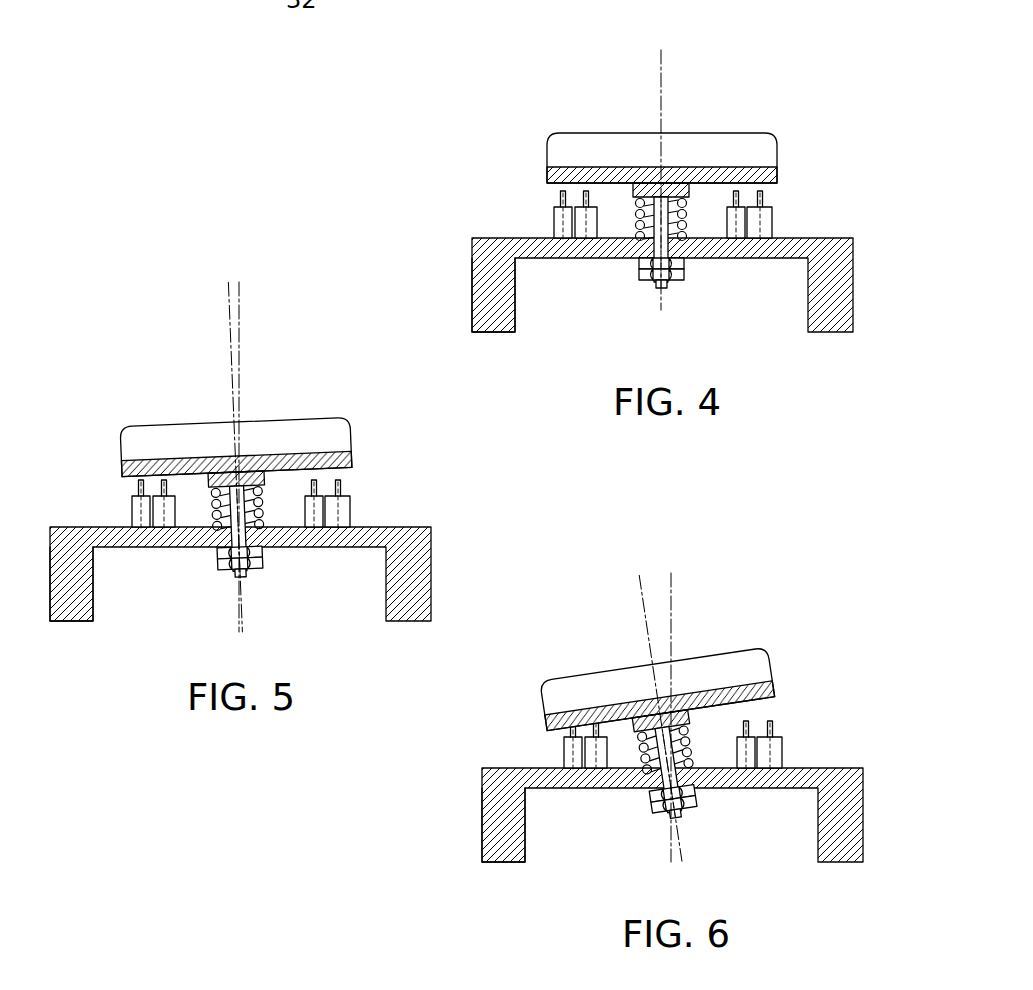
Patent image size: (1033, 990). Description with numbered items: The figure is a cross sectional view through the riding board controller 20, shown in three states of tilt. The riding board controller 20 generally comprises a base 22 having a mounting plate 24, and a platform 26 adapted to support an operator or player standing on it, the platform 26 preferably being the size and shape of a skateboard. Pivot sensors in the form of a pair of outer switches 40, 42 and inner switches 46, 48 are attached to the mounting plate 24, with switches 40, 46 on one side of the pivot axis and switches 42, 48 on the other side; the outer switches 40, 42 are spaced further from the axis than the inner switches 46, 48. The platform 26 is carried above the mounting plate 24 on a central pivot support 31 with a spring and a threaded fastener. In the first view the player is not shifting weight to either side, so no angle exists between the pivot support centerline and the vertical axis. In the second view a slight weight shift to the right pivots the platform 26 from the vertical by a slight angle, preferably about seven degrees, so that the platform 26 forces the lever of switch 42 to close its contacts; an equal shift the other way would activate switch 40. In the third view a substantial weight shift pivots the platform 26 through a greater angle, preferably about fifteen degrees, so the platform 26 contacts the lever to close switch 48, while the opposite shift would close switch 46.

In FIG. 4, the riding board controller 20 is at (500, 182).
In FIG. 5, the riding board controller 20 is at (240, 447).
In FIG. 6, the riding board controller 20 is at (669, 717).
In FIG. 4, the base 22 is at (470, 284).
In FIG. 5, the base 22 is at (65, 611).
In FIG. 6, the base 22 is at (496, 852).
In FIG. 4, the mounting plate 24 is at (831, 237).
In FIG. 5, the mounting plate 24 is at (246, 552).
In FIG. 6, the mounting plate 24 is at (676, 790).
In FIG. 4, the platform 26 is at (770, 133).
In FIG. 5, the platform 26 is at (248, 425).
In FIG. 6, the platform 26 is at (636, 686).
In FIG. 4, the pivot bolt with nuts 31 is at (652, 298).
In FIG. 5, the pivot bolt with nuts 31 is at (219, 477).
In FIG. 6, the pivot bolt with nuts 31 is at (655, 744).
In FIG. 4, the outer switch 40 is at (762, 238).
In FIG. 5, the outer switch 40 is at (337, 532).
In FIG. 6, the outer switch 40 is at (769, 773).
In FIG. 4, the outer switch 42 is at (562, 238).
In FIG. 5, the outer switch 42 is at (133, 532).
In FIG. 6, the outer switch 42 is at (565, 773).
In FIG. 4, the inner switch 46 is at (727, 238).
In FIG. 5, the inner switch 46 is at (302, 532).
In FIG. 6, the inner switch 46 is at (733, 773).
In FIG. 4, the inner switch 48 is at (588, 238).
In FIG. 5, the inner switch 48 is at (170, 532).
In FIG. 6, the inner switch 48 is at (601, 773).